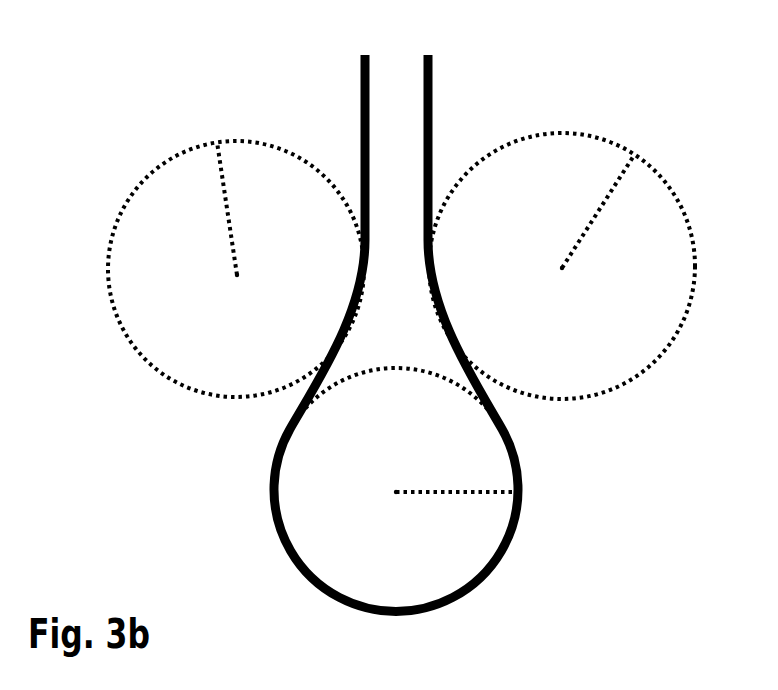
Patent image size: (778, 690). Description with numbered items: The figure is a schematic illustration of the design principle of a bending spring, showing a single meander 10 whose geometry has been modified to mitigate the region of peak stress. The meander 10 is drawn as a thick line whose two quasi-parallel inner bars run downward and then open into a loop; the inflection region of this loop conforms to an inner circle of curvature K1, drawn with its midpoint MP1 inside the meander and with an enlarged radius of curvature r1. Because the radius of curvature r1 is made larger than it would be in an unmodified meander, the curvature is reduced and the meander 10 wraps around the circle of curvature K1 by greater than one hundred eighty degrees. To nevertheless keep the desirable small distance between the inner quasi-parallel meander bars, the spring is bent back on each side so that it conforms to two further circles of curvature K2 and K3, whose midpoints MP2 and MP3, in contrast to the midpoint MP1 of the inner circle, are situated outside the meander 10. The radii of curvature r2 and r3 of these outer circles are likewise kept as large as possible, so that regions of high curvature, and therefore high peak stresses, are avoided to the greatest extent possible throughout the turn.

The meander 10 is at (432, 138).
The circle of curvature K1 is at (273, 492).
The circle of curvature K2 is at (138, 347).
The circle of curvature K3 is at (652, 165).
The midpoint MP1 is at (385, 514).
The midpoint MP2 is at (227, 298).
The midpoint MP3 is at (527, 276).
The radius of curvature r1 is at (456, 473).
The radius of curvature r2 is at (243, 208).
The radius of curvature r3 is at (597, 212).